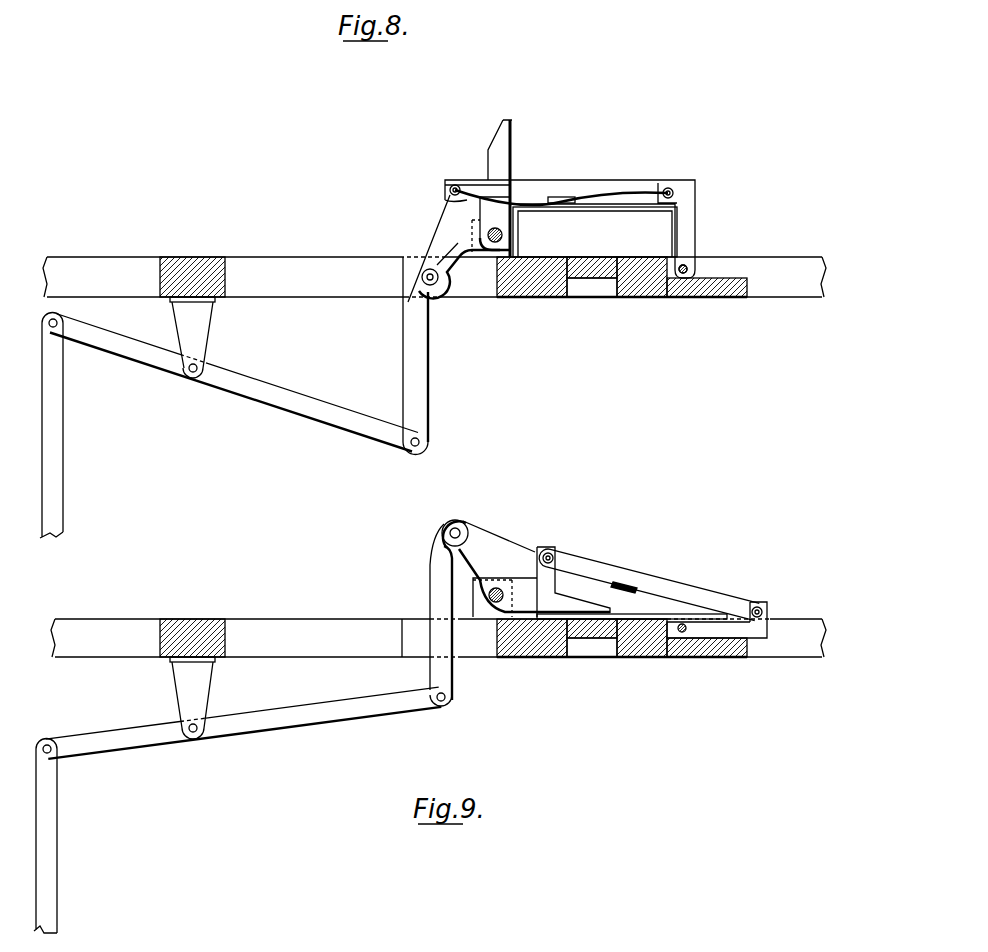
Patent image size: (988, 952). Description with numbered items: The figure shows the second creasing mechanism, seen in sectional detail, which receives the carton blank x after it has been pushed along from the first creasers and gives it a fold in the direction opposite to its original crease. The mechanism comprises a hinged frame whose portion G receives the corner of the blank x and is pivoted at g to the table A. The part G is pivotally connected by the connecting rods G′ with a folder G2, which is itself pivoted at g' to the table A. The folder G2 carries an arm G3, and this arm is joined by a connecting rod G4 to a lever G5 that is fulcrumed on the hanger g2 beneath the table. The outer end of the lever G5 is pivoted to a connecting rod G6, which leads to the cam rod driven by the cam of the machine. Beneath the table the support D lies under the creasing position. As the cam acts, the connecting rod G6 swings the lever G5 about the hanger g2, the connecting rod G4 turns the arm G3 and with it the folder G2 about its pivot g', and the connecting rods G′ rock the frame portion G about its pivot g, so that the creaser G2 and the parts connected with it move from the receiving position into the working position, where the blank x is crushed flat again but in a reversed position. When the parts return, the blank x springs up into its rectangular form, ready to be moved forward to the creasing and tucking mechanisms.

In FIG. 8, the table A is at (150, 298).
In FIG. 9, the table A is at (316, 657).
In FIG. 8, the rail support block D is at (592, 278).
In FIG. 9, the rail support block D is at (593, 640).
In FIG. 8, the hinged frame portion G is at (694, 227).
In FIG. 9, the hinged frame portion G is at (755, 637).
In FIG. 8, the connecting rods G′ is at (605, 182).
In FIG. 9, the connecting rods G′ is at (640, 578).
In FIG. 8, the folder G2 is at (497, 160).
In FIG. 9, the folder G2 is at (575, 590).
In FIG. 8, the arm G3 is at (467, 265).
In FIG. 9, the arm G3 is at (468, 527).
In FIG. 8, the connecting rod G4 is at (410, 352).
In FIG. 9, the connecting rod G4 is at (437, 672).
In FIG. 8, the lever G5 is at (276, 406).
In FIG. 9, the lever G5 is at (311, 724).
In FIG. 8, the connecting rod G6 is at (66, 468).
In FIG. 9, the connecting rod G6 is at (62, 838).
In FIG. 8, the pivot g is at (703, 252).
In FIG. 9, the pivot g is at (689, 614).
In FIG. 8, the pivot g' is at (456, 228).
In FIG. 9, the pivot g' is at (512, 559).
In FIG. 8, the hanger g2 is at (211, 315).
In FIG. 9, the hanger g2 is at (211, 675).
In FIG. 8, the blank x is at (595, 232).
In FIG. 9, the blank x is at (637, 614).